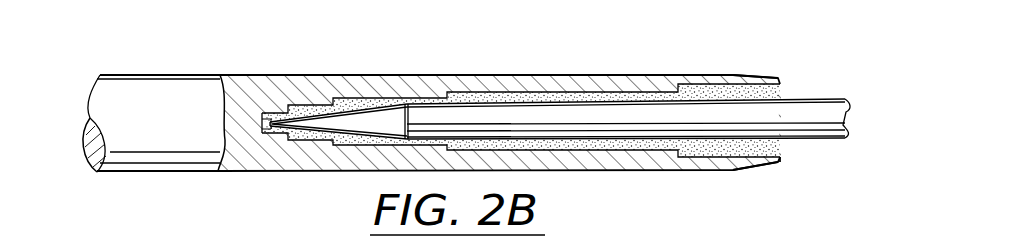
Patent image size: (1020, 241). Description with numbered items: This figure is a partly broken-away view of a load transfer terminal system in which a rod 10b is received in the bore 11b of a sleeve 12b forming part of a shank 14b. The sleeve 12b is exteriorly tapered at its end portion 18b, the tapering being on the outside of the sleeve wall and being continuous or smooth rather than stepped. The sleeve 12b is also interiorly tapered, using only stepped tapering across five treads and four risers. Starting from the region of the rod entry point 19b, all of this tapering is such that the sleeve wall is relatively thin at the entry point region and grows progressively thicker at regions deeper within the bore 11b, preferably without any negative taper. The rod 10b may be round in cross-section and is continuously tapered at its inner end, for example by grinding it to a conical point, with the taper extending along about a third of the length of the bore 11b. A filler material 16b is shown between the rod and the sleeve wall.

The rod 10b is at (830, 97).
The bore 11b is at (637, 92).
The sleeve 12b is at (523, 74).
The shank 14b is at (212, 76).
The filler material 16b is at (458, 95).
The end portion 18b is at (753, 76).
The rod entry point 19b is at (782, 161).